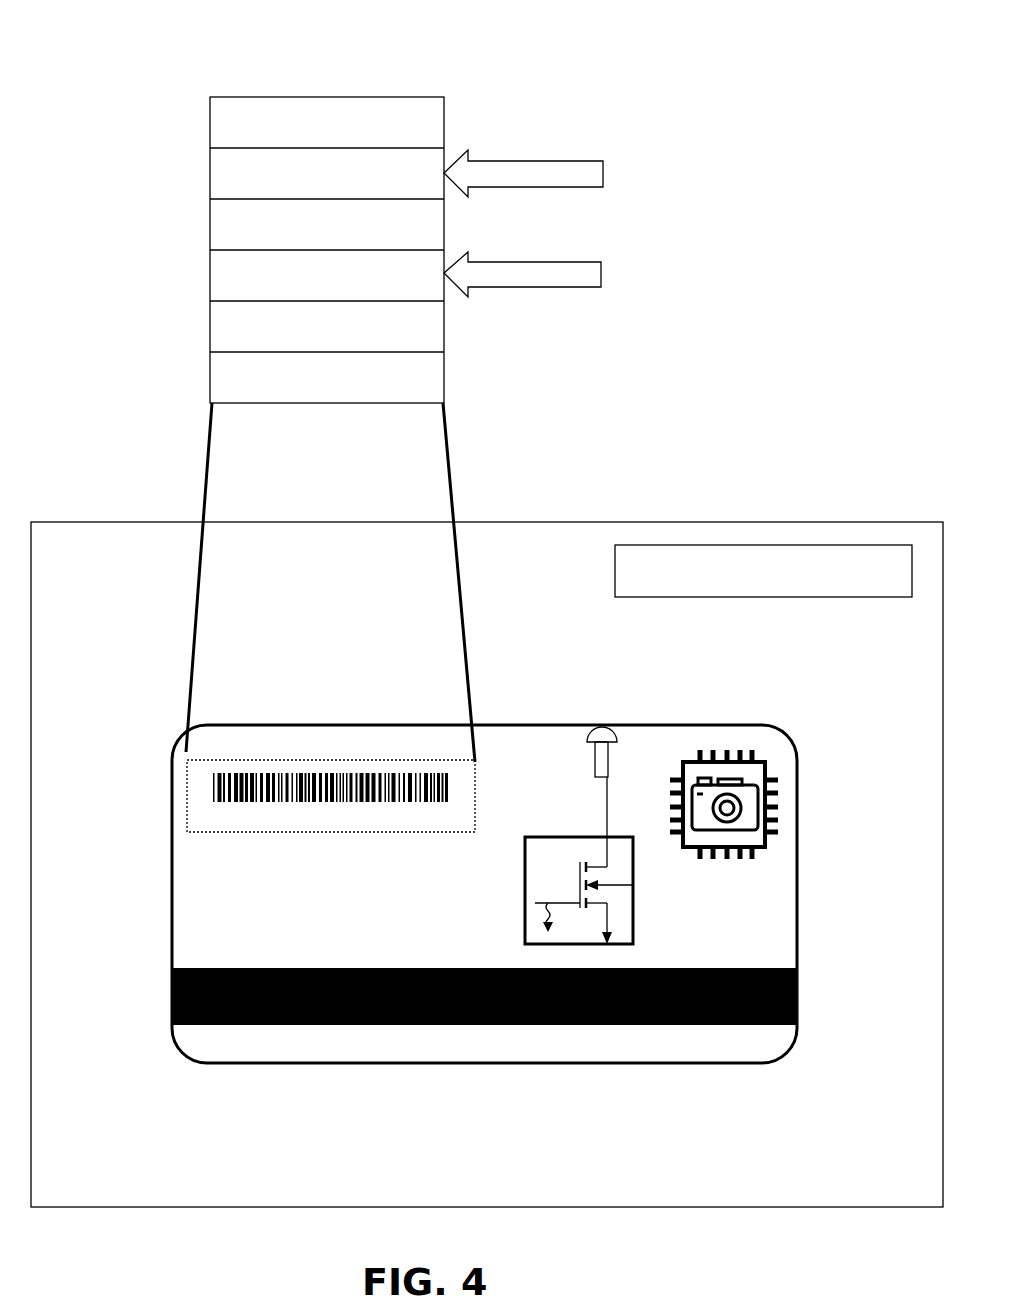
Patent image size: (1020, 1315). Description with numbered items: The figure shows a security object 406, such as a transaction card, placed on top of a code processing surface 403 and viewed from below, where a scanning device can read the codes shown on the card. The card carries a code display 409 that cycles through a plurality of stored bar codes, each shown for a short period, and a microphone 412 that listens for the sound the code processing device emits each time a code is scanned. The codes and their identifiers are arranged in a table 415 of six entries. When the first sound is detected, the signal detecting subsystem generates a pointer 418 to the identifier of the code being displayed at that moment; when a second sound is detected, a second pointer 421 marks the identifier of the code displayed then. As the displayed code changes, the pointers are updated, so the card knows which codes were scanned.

The code processing surface 403 is at (598, 522).
The security object 406 is at (258, 725).
The code display 409 is at (483, 785).
The microphone 412 is at (615, 752).
The table 415 is at (326, 97).
The pointer 418 is at (604, 173).
The second signal 421 is at (601, 273).